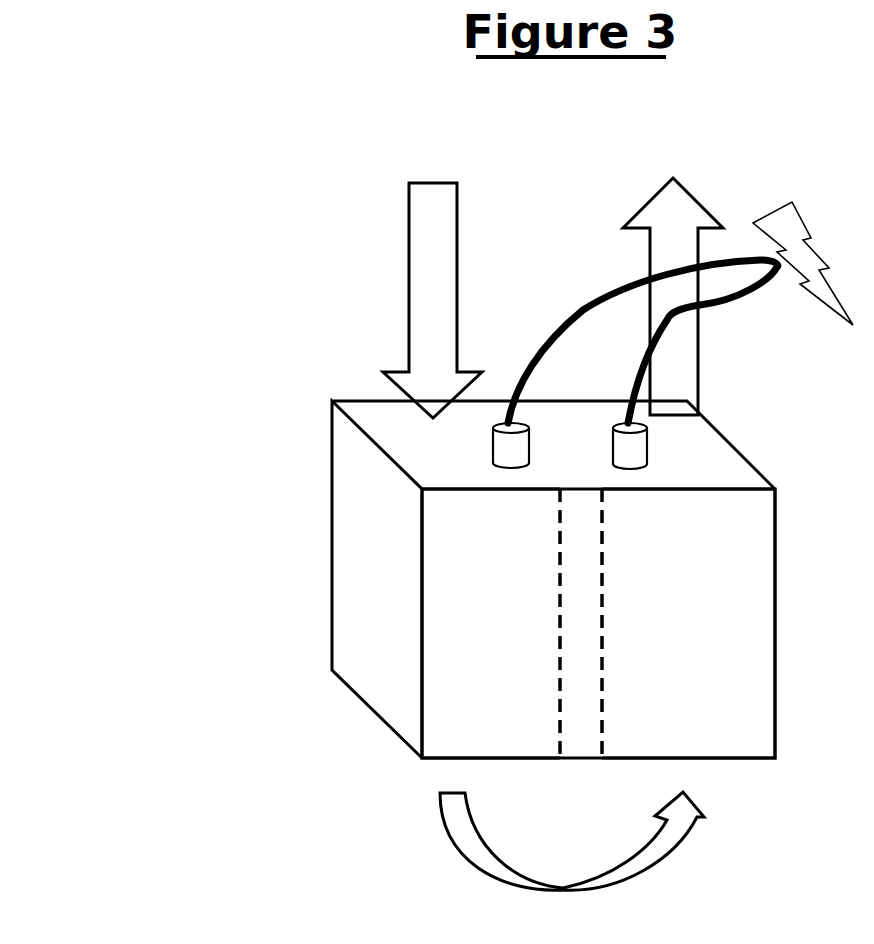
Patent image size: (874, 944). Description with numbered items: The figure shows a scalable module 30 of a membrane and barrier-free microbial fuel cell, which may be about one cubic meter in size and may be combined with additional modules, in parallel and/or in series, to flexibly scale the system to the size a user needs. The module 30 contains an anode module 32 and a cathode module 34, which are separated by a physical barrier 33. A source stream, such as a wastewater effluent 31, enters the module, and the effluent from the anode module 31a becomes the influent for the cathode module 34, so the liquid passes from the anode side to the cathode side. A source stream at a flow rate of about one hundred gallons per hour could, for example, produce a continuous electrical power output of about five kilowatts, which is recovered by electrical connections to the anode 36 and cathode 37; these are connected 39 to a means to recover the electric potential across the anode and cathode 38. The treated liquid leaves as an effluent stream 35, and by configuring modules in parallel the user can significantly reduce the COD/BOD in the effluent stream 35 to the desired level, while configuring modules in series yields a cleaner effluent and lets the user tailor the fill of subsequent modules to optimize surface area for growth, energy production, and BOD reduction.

The module 30 is at (290, 543).
The wastewater effluent 31 is at (432, 300).
The effluent from the anode module 31a is at (572, 841).
The anode module 32 is at (491, 623).
The physical barrier 33 is at (584, 623).
The cathode module 34 is at (688, 623).
The effluent stream 35 is at (673, 296).
The anode 36 is at (511, 445).
The cathode 37 is at (630, 446).
The means to recover the electric potential 38 is at (806, 263).
The electrical connection 39 is at (663, 320).